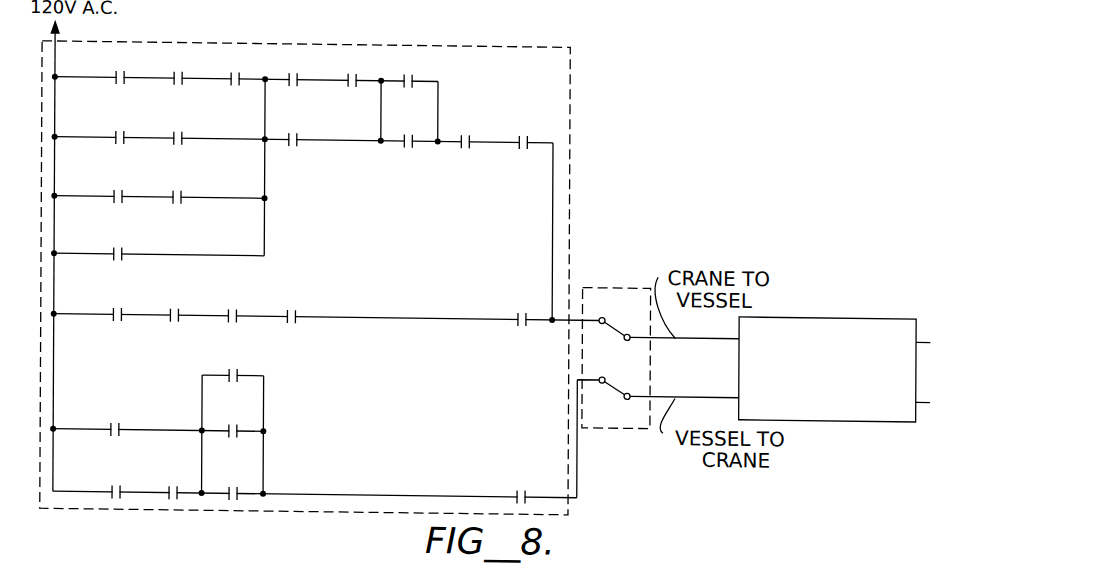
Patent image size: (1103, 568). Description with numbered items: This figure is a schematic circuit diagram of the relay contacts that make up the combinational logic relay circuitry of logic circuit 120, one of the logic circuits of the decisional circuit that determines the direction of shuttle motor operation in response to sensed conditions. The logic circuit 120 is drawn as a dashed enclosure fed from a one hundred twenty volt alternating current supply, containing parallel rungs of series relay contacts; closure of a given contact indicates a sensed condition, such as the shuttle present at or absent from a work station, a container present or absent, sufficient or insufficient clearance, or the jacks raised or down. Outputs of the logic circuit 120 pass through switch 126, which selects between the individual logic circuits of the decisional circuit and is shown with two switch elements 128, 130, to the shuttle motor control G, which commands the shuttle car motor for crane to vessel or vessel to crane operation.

The logic circuit 120 is at (572, 89).
The switch 126 is at (594, 280).
The crane to vessel switch 128 is at (612, 318).
The vessel to crane switch 130 is at (612, 378).
The shuttle motor control G is at (824, 304).